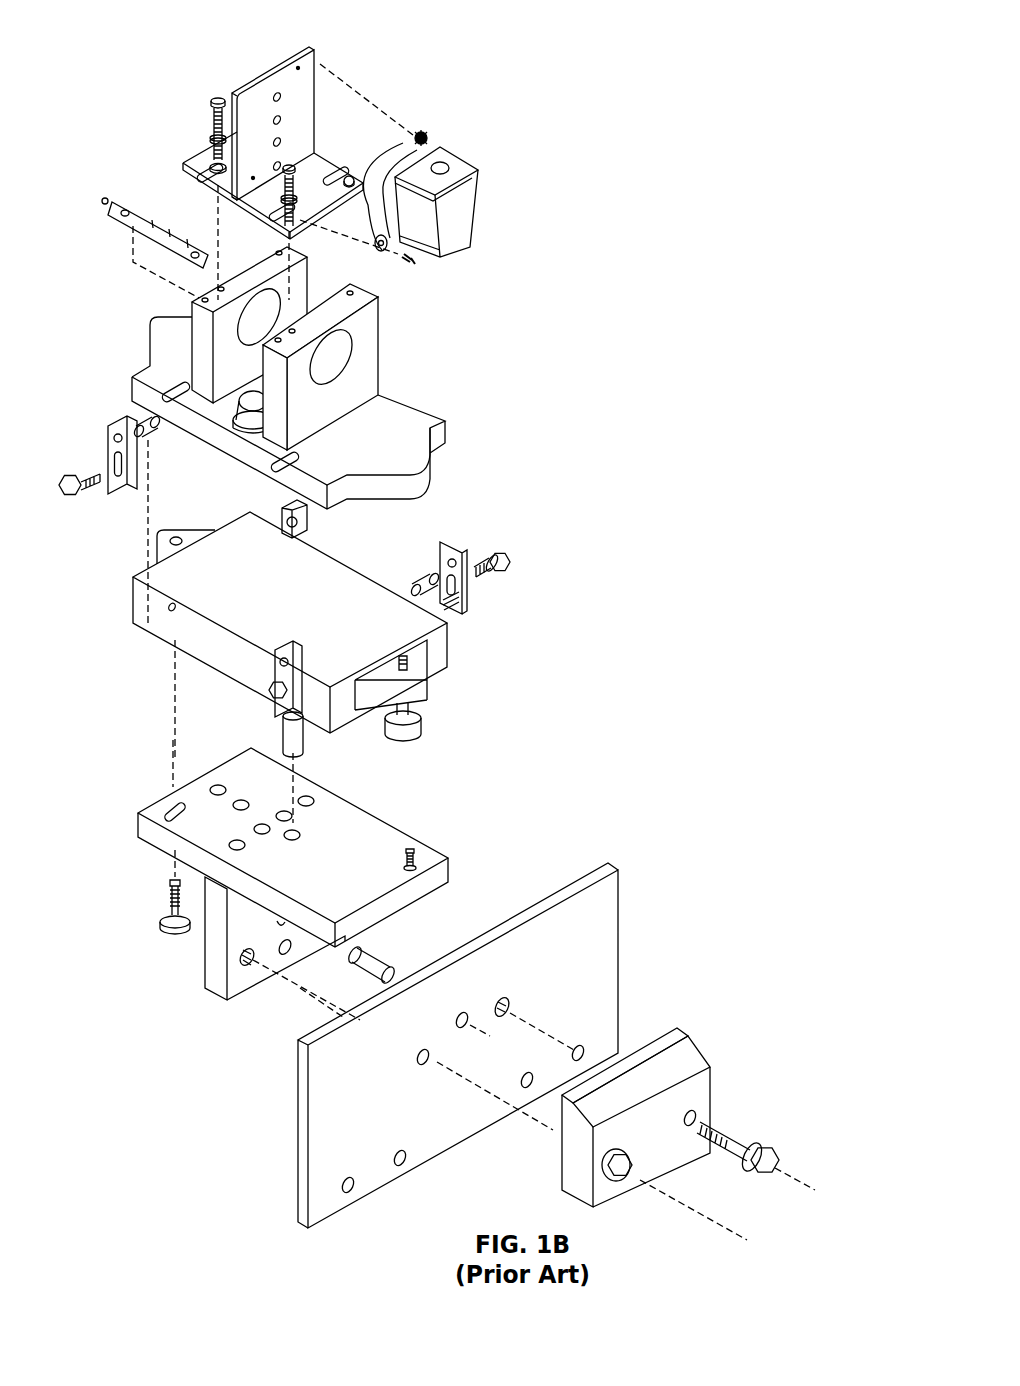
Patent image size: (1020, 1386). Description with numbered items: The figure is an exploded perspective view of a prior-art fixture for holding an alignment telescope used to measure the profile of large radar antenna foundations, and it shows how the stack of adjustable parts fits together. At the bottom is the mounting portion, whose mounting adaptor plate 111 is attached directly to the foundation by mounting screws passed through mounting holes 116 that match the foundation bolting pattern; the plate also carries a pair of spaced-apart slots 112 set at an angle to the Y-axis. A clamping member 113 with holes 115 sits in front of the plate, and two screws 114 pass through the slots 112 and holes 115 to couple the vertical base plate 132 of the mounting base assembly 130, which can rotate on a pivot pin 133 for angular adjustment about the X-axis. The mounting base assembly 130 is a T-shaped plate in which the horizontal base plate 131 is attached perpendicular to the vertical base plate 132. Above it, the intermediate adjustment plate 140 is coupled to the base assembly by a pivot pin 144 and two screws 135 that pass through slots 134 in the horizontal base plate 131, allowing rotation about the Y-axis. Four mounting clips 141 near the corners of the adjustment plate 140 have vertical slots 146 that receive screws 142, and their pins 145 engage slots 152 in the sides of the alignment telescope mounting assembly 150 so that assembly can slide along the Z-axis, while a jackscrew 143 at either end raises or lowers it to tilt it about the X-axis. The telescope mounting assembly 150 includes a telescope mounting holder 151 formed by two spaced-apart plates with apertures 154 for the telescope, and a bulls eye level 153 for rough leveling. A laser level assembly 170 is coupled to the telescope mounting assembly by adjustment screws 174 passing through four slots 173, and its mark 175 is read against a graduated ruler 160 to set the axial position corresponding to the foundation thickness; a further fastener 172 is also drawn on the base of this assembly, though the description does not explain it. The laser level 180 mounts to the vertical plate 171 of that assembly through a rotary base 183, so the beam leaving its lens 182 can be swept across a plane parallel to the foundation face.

The mounting adaptor plate 111 is at (494, 1045).
The spaced-apart slots 112 is at (515, 1005).
The clamping member 113 is at (668, 1111).
The screws 114 is at (760, 1140).
The holes 115 is at (703, 1112).
The mounting holes 116 is at (585, 1050).
The mounting base assembly 130 is at (282, 880).
The horizontal base plate 131 is at (160, 808).
The vertical base plate 132 is at (210, 957).
The pivot pin 133 is at (380, 950).
The slots 134 is at (395, 857).
The screws 135 is at (168, 893).
The intermediate adjustment plate 140 is at (283, 634).
The mounting clips 141 is at (458, 545).
The screws 142 is at (512, 556).
The jackscrew 143 is at (425, 720).
The pivot pin 144 is at (282, 737).
The pins 145 is at (420, 573).
The vertical slots 146 is at (462, 596).
The alignment telescope mounting assembly 150 is at (268, 435).
The telescope mounting holder 151 is at (342, 402).
The slots 152 is at (287, 488).
The bulls eye level 153 is at (300, 432).
The apertures 154 is at (253, 330).
The graduated ruler 160 is at (110, 216).
The laser level assembly 170 is at (252, 164).
The vertical plate 171 is at (320, 62).
The screw 172 is at (344, 170).
The slots 173 is at (270, 218).
The adjustment screws 174 is at (215, 99).
The indicia or mark 175 is at (232, 206).
The laser level 180 is at (457, 172).
The lens 182 is at (445, 165).
The rotary base 183 is at (420, 133).